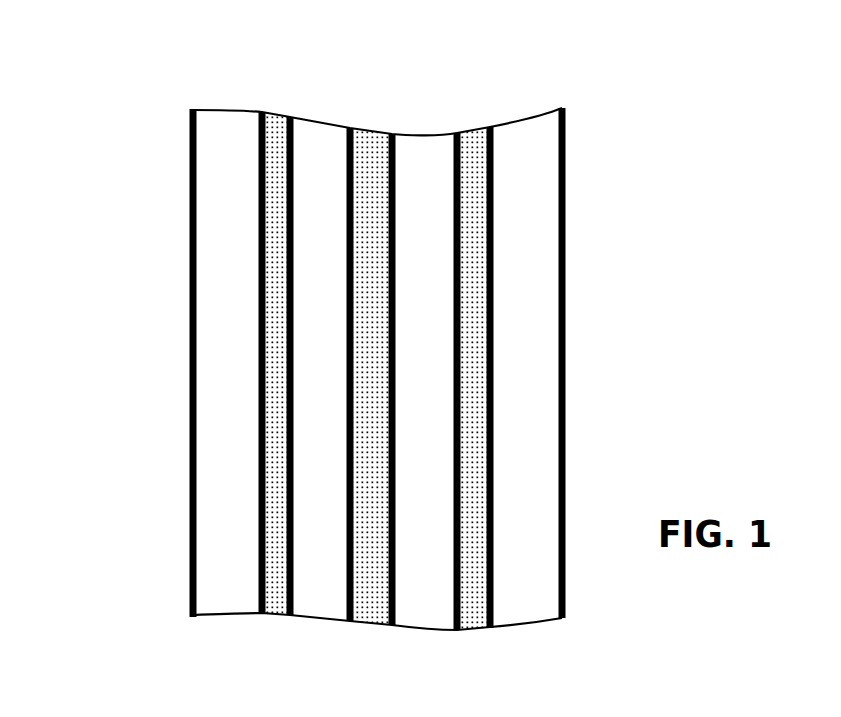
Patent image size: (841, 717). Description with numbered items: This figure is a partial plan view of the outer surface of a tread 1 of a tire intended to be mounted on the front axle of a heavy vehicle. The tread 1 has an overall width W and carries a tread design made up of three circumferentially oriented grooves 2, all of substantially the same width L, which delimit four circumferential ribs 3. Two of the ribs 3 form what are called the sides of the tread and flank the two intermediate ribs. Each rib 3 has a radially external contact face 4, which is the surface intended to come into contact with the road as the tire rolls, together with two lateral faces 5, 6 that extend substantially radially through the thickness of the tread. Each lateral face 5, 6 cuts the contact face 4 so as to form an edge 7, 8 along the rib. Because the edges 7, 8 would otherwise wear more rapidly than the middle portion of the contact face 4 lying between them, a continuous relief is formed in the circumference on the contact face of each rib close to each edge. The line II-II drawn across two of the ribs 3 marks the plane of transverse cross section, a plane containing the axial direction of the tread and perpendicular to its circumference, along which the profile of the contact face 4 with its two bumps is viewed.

The tread 1 is at (596, 329).
The grooves 2 is at (268, 166).
The circumferential ribs 3 is at (238, 482).
The contact face 4 is at (323, 230).
The lateral face 5 is at (275, 334).
The lateral face 6 is at (366, 429).
The edge 7 is at (283, 263).
The edge 8 is at (353, 303).
The width of tread W is at (193, 108).
The width of grooves L is at (392, 133).
The line II- II is at (375, 642).